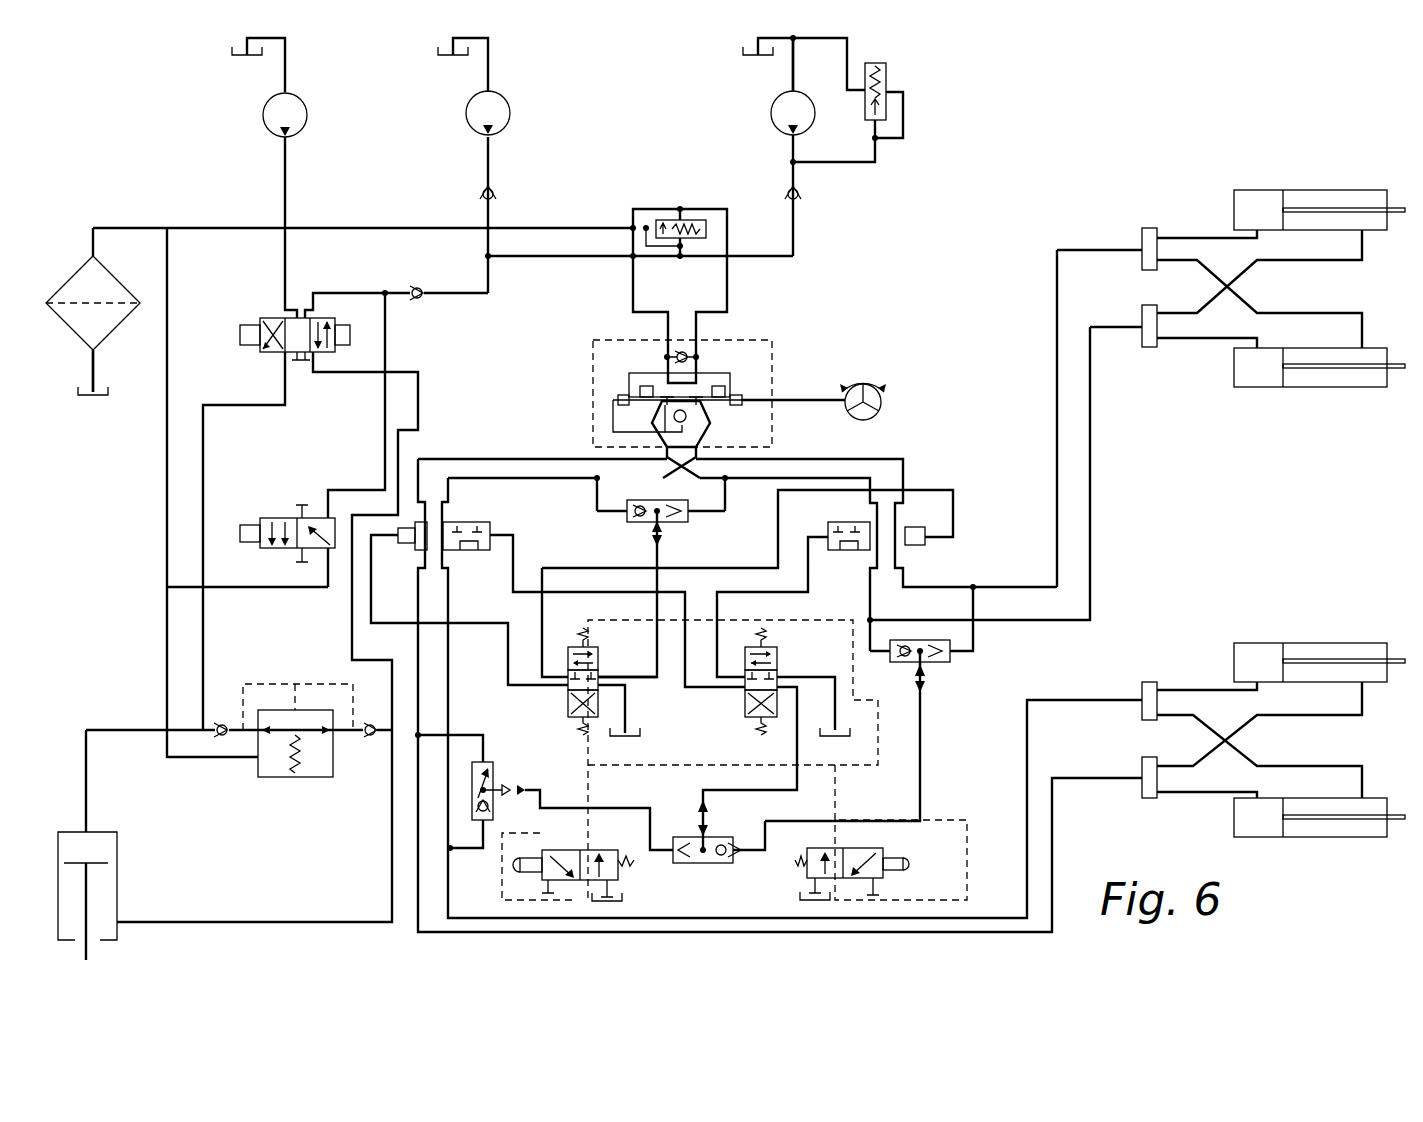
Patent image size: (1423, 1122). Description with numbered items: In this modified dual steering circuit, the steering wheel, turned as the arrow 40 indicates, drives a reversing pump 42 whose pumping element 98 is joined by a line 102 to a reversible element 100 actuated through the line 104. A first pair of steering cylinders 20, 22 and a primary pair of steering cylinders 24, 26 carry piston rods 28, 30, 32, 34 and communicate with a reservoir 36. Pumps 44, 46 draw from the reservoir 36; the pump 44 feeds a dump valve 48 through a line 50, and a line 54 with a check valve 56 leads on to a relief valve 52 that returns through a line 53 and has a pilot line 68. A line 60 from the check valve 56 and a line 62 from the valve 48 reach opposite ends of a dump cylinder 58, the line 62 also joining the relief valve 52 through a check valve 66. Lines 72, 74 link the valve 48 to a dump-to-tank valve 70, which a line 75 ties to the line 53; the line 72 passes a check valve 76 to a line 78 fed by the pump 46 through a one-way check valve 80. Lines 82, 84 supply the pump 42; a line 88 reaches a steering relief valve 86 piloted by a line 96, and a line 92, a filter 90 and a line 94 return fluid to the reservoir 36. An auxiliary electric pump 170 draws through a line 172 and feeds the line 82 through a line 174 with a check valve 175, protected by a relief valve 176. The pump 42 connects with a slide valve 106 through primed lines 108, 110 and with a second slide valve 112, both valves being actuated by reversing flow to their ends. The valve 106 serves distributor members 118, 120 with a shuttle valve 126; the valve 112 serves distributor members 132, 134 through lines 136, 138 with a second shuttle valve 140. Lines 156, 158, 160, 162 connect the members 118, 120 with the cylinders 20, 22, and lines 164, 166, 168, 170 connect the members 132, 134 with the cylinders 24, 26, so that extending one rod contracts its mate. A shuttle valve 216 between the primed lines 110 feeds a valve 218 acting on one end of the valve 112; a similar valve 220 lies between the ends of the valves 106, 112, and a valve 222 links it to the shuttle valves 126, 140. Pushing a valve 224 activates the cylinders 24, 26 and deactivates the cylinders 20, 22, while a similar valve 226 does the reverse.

The steering cylinder 20 is at (1310, 838).
The steering cylinder 22 is at (1322, 643).
The steering cylinder 24 is at (1315, 388).
The steering cylinder 26 is at (1335, 190).
The piston rod 28 is at (1395, 822).
The piston rod 30 is at (1395, 665).
The piston rod 32 is at (1392, 370).
The piston rod 34 is at (1395, 213).
The reservoir 36 is at (240, 57).
The arrow 40 is at (866, 382).
The reversing pump 42 is at (745, 350).
The pump 44 is at (305, 118).
The pump 46 is at (505, 118).
The dump valve 48 is at (275, 338).
The line 50 is at (287, 193).
The relief valve 52 is at (320, 778).
The line 53 is at (165, 548).
The line 54 is at (205, 635).
The check valve 56 is at (220, 737).
The dump cylinder 58 is at (118, 862).
The line 60 is at (125, 728).
The line 62 is at (390, 830).
The check valve 66 is at (370, 737).
The pilot pressure connection line 68 is at (308, 684).
The dump-to-tank valve 70 is at (280, 517).
The line 72 is at (322, 293).
The line 74 is at (387, 343).
The line 75 is at (318, 588).
The check valve 76 is at (420, 289).
The line 78 is at (490, 278).
The check valve 80 is at (495, 190).
The line 82 is at (588, 258).
The line 84 is at (635, 288).
The steering relief valve 86 is at (693, 216).
The line 88 is at (684, 246).
The filter 90 is at (78, 280).
The line 92 is at (208, 226).
The line 94 is at (97, 365).
The line 96 is at (643, 236).
The pumping element 98 is at (672, 418).
The reversible element 100 is at (640, 380).
The line 102 is at (613, 401).
The actuator means 104 is at (790, 398).
The slide valve 106 is at (465, 522).
The line 108 is at (478, 457).
The line 110 is at (518, 480).
The slide valve 112 is at (840, 521).
The distributor member 118 is at (1146, 798).
The distributor member 120 is at (1147, 682).
The shuttle valve 126 is at (493, 776).
The distributor member 132 is at (1150, 347).
The distributor member 134 is at (1147, 228).
The line 136 is at (1092, 462).
The line 138 is at (1055, 293).
The shuttle valve 140 is at (945, 660).
The line 156 is at (1195, 793).
The line 158 is at (1322, 716).
The line 160 is at (1185, 690).
The line 162 is at (1335, 766).
The line 164 is at (1195, 340).
The line 166 is at (1318, 262).
The line 168 is at (1188, 238).
The auxiliary pump 170 is at (772, 110).
The line 172 is at (796, 58).
The line 174 is at (795, 229).
The check valve 175 is at (802, 190).
The relief valve 176 is at (887, 73).
The shuttle valve 216 is at (672, 523).
The valve 218 is at (600, 654).
The valve 220 is at (780, 654).
The valve 222 is at (708, 838).
The valve 224 is at (620, 878).
The valve 226 is at (880, 851).